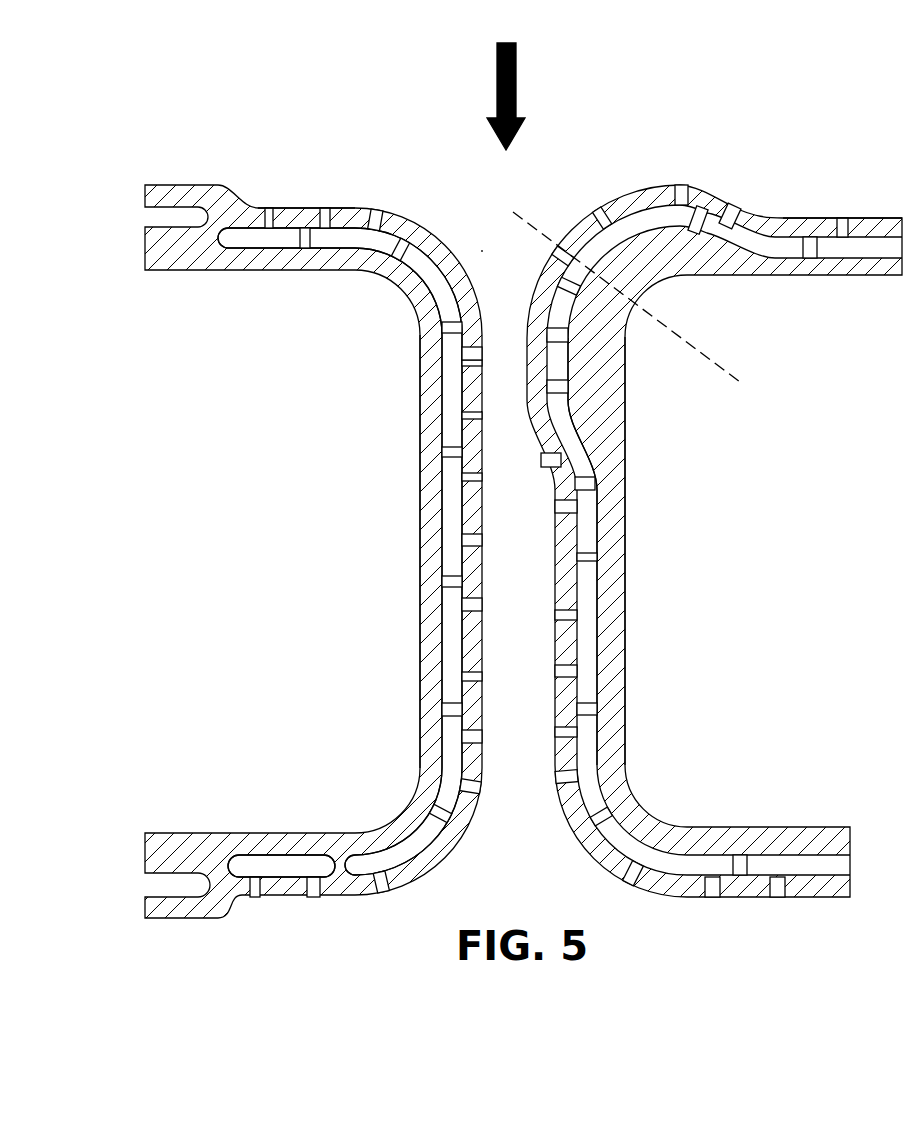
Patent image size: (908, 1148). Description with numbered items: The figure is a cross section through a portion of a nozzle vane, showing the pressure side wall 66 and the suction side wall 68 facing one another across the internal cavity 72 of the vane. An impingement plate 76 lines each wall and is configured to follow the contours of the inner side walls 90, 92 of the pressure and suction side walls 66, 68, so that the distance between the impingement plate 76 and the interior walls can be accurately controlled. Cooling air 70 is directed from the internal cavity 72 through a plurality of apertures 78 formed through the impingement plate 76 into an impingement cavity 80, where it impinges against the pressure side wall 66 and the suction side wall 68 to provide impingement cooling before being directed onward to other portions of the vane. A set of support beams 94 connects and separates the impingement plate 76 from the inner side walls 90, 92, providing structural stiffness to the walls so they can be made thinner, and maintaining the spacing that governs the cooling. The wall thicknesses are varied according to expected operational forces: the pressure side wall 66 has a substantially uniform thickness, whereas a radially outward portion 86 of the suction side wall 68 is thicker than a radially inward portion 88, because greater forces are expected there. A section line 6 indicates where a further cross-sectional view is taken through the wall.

The section line 6- 6 is at (513, 212).
The pressure side wall 66 is at (404, 576).
The suction side wall 68 is at (637, 490).
The cooling air 70 is at (497, 88).
The internal cavity 72 is at (487, 218).
The impingement plate 76 is at (350, 207).
The apertures 78 is at (735, 196).
The impingement cavity 80 is at (446, 386).
The radially outward portion 86 is at (643, 412).
The radially inward portion 88 is at (677, 710).
The inner side wall 90 is at (443, 643).
The inner side wall 92 is at (593, 553).
The support beams 94 is at (380, 248).